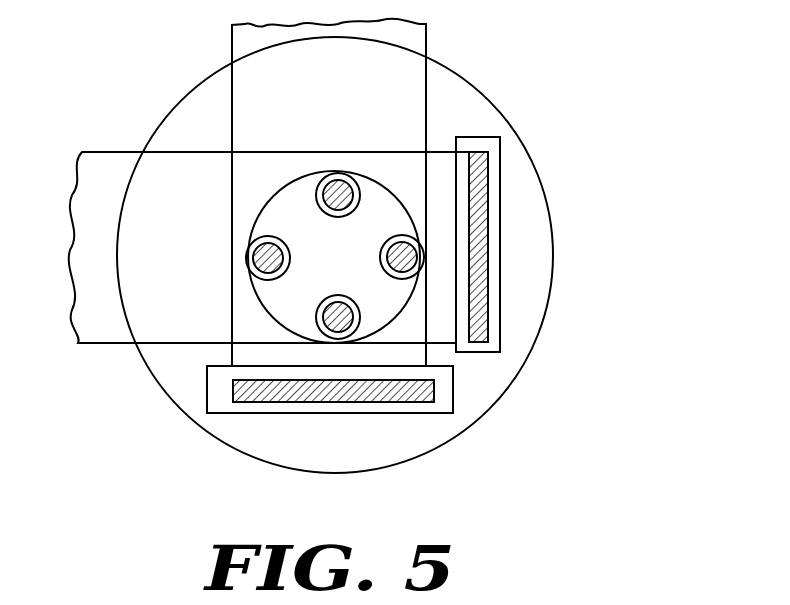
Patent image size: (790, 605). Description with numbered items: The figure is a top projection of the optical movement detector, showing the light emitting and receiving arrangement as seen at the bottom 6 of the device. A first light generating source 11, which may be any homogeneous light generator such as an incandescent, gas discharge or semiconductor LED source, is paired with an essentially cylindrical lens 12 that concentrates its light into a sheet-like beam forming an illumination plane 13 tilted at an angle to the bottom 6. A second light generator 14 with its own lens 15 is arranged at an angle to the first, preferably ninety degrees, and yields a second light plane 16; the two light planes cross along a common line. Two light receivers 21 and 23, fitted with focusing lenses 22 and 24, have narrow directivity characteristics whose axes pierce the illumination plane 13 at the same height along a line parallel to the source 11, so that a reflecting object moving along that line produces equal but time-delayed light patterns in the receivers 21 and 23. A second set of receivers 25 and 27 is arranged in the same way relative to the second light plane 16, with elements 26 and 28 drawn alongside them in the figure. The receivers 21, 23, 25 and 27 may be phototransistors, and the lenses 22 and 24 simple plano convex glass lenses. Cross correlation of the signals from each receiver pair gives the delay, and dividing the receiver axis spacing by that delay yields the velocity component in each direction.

The device bottom 6 is at (527, 162).
The light generating source 11 is at (420, 413).
The cylindrical lens 12 is at (270, 404).
The illumination plane 13 is at (426, 32).
The light generator 14 is at (500, 337).
The lens 15 is at (478, 352).
The light plane 16 is at (106, 160).
The light receiver 21 is at (288, 228).
The focusing lens 22 is at (274, 268).
The light receiver 23 is at (394, 251).
The focusing lens 24 is at (405, 242).
The light receiver 25 is at (331, 172).
The third pin 26 is at (342, 181).
The light receiver 27 is at (323, 302).
The fourth pin 28 is at (350, 307).